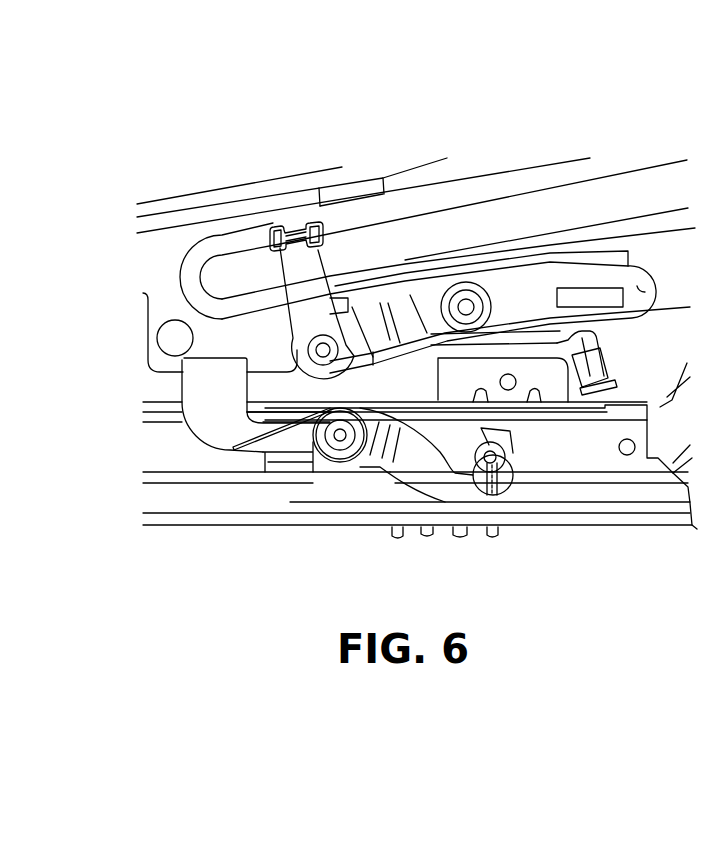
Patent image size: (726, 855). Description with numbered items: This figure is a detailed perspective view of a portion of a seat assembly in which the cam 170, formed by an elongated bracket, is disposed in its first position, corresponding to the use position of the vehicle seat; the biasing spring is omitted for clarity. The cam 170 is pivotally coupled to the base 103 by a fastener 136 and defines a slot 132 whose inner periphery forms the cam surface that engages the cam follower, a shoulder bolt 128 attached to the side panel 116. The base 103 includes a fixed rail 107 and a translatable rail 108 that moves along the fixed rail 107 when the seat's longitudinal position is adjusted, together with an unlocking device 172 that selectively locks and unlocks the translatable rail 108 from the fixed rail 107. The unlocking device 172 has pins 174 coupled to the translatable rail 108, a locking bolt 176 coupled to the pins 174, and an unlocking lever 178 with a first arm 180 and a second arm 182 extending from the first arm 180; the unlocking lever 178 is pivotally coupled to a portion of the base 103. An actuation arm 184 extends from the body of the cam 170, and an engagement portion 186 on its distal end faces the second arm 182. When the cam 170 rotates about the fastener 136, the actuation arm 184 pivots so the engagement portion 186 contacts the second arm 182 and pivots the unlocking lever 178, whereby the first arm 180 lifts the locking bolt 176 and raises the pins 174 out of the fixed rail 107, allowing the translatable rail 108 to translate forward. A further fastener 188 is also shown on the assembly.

The base 103 is at (217, 497).
The fixed rail 107 is at (389, 544).
The translatable rail 108 is at (177, 445).
The side panel 116 is at (237, 203).
The shoulder bolt 128 is at (466, 300).
The slot 132 is at (640, 286).
The fastener 136 is at (307, 350).
The cam 170 is at (551, 270).
The unlocking device 172 is at (593, 532).
The pins 174 is at (497, 533).
The locking bolt 176 is at (478, 442).
The unlocking lever 178 is at (441, 487).
The first arm 180 is at (383, 501).
The second arm 182 is at (213, 383).
The actuation arm 184 is at (300, 268).
The engagement portion 186 is at (297, 230).
The fastener 188 is at (315, 465).